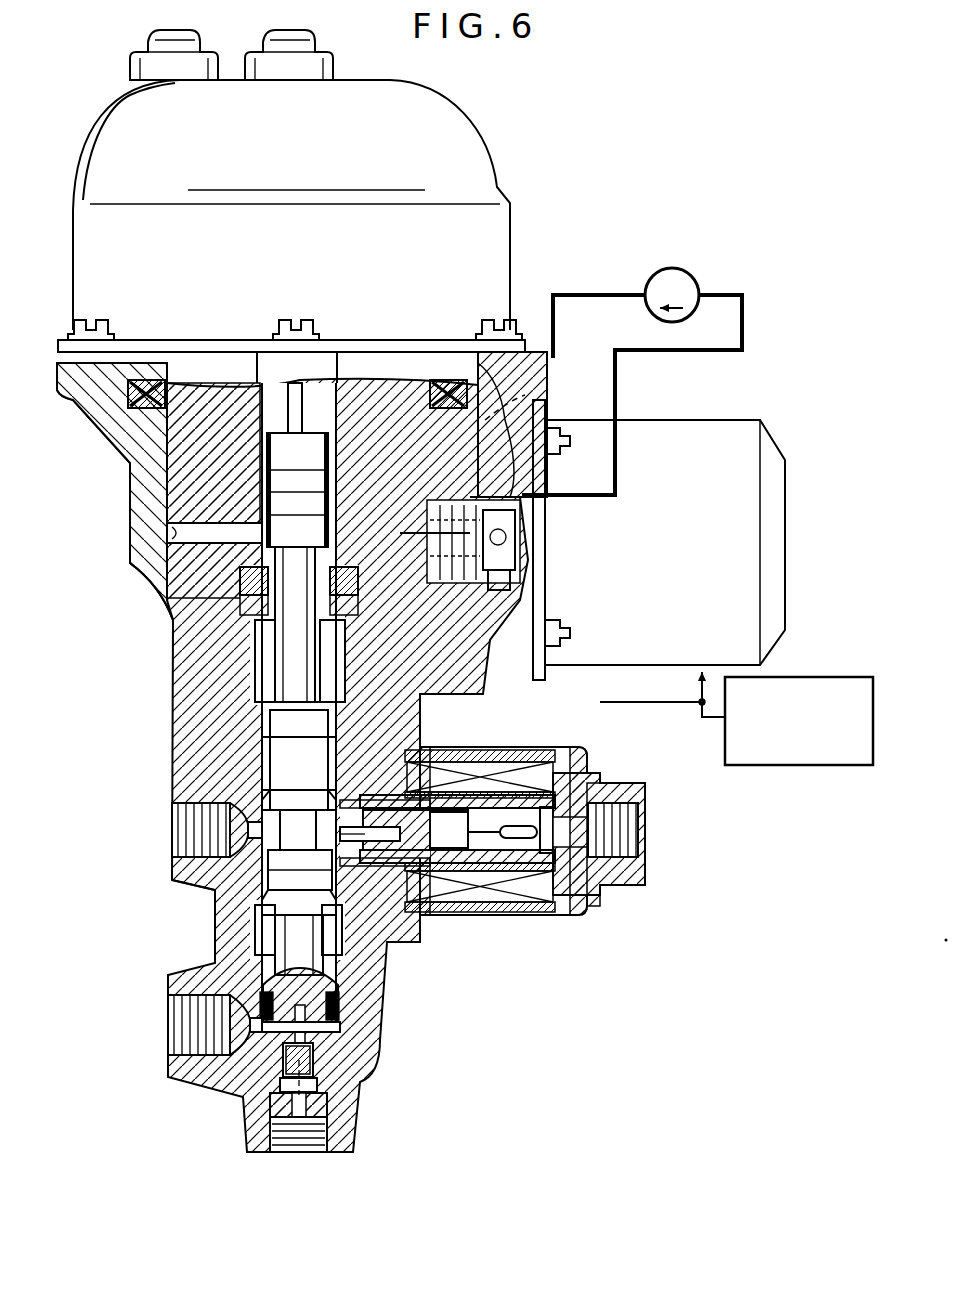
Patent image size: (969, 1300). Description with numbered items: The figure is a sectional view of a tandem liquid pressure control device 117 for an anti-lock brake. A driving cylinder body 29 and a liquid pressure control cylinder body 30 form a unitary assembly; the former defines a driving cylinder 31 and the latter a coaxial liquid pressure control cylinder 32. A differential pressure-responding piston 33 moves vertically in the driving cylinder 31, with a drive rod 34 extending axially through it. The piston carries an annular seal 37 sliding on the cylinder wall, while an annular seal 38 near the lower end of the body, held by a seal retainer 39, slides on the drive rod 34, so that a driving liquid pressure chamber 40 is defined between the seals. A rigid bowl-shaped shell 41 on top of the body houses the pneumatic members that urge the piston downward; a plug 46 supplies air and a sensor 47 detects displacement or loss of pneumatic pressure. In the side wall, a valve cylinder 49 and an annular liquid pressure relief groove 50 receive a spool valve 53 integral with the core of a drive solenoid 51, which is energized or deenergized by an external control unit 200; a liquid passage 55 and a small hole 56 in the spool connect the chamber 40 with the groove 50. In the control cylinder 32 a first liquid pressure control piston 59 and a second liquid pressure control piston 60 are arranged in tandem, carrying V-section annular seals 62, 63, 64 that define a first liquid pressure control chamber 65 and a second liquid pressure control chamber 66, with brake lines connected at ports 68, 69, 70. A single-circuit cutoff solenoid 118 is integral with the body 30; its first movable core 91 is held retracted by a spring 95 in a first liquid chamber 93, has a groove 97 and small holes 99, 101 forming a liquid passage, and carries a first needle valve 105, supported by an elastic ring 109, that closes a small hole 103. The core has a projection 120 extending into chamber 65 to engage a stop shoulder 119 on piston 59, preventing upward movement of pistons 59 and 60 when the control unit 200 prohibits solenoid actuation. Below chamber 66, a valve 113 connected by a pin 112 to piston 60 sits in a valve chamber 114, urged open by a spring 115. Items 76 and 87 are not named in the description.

The driving cylinder body 29 is at (93, 390).
The liquid pressure control cylinder body 30 is at (200, 742).
The driving cylinder 31 is at (193, 550).
The liquid pressure control cylinder 32 is at (275, 655).
The differential pressure-responding piston 33 is at (180, 437).
The drive rod 34 is at (167, 530).
The annular seal 37 is at (127, 392).
The annular seal 38 is at (240, 585).
The seal retainer 39 is at (258, 635).
The driving liquid pressure chamber 40 is at (137, 567).
The rigid bowl-shaped shell 41 is at (470, 128).
The plug 46 is at (148, 46).
The sensor 47 is at (265, 46).
The valve cylinder 49 is at (480, 552).
The annular liquid pressure relief groove 50 is at (520, 590).
The drive solenoid 51 is at (688, 420).
The spool valve 53 is at (530, 372).
The liquid passage 55 is at (525, 395).
The small hole 56 is at (525, 520).
The first liquid pressure control piston 59 is at (262, 710).
The second liquid pressure control piston 60 is at (280, 945).
The annular seal 62 is at (262, 790).
The annular seal 63 is at (255, 910).
The annular seal 64 is at (262, 990).
The first liquid pressure control chamber 65 is at (262, 820).
The second liquid pressure control chamber 66 is at (340, 1026).
The port 68 is at (305, 1135).
The port 69 is at (180, 835).
The port 70 is at (175, 1018).
The cap 76 is at (578, 755).
The threaded port 87 is at (645, 830).
The first movable core 91 is at (460, 790).
The first liquid chamber 93 is at (520, 760).
The spring 95 is at (490, 905).
The groove 97 is at (470, 880).
The small hole 99 is at (375, 915).
The small hole 101 is at (445, 865).
The small hole 103 is at (600, 885).
The first needle valve 105 is at (520, 870).
The elastic ring 109 is at (530, 910).
The pin 112 is at (315, 1060).
The valve 113 is at (282, 1086).
The valve chamber 114 is at (275, 1105).
The spring 115 is at (320, 1090).
The tandem liquid pressure control device 117 is at (540, 272).
The single-circuit cutoff solenoid 118 is at (529, 864).
The stop shoulder 119 is at (210, 872).
The projection 120 is at (415, 735).
The external control unit 200 is at (795, 770).